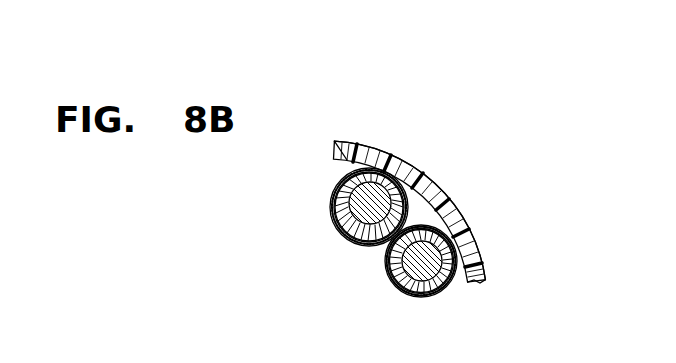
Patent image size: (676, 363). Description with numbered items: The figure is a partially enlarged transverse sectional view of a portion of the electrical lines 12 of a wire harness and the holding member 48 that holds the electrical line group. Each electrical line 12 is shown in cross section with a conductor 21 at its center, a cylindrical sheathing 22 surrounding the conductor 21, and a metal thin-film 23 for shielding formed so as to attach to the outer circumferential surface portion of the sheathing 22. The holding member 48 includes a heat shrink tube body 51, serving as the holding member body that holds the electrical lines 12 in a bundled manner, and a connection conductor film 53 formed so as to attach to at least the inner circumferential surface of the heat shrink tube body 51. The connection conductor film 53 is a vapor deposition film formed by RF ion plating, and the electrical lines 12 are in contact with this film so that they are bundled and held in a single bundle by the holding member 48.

The electrical line 12 is at (355, 225).
The conductor 21 is at (338, 223).
The sheathing 22 is at (334, 193).
The metal thin-film 23 is at (343, 179).
The holding member 48 is at (419, 155).
The heat shrink tube body 51 is at (457, 196).
The connection conductor film 53 is at (466, 285).